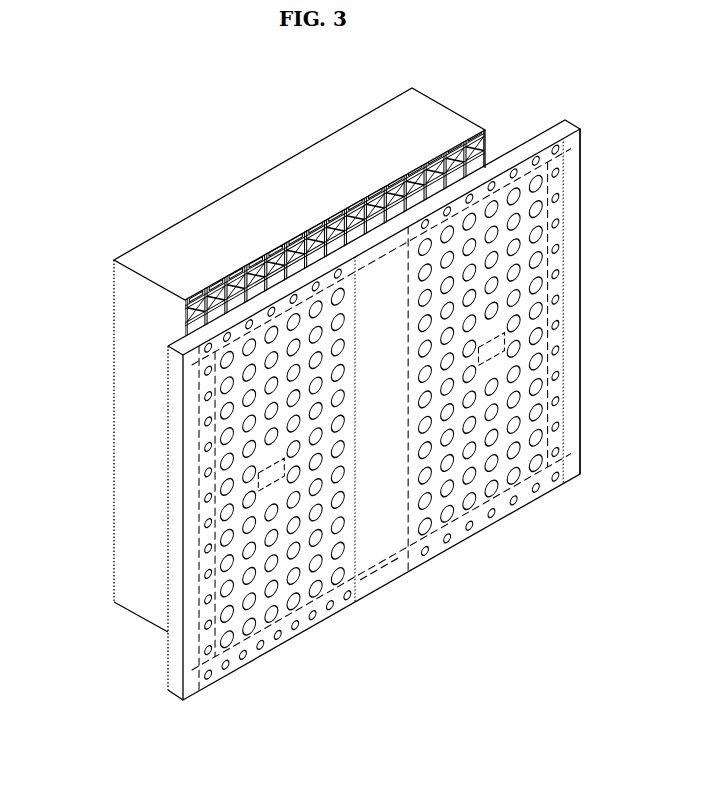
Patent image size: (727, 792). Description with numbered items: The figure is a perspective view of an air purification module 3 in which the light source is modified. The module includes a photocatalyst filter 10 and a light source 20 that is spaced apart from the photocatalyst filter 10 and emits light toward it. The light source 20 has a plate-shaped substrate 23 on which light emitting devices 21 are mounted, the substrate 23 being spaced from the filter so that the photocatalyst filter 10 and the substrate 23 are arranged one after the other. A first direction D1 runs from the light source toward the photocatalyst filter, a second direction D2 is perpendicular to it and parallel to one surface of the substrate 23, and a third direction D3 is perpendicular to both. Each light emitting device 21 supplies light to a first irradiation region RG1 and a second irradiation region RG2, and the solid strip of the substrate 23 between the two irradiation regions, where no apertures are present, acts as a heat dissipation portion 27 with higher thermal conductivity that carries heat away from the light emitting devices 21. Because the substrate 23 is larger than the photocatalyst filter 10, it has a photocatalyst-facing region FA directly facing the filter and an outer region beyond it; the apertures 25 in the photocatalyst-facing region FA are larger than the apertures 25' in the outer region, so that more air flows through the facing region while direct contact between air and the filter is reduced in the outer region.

The air purification module 3 is at (56, 110).
The photocatalyst filter 10 is at (195, 230).
The light source 20 is at (360, 410).
The light emitting device 21 is at (505, 344).
The substrate 23 is at (570, 287).
The aperture 25 is at (590, 386).
The aperture 25' is at (604, 313).
The heat dissipation portion 27 is at (383, 467).
The first irradiation region RG1 is at (198, 515).
The second irradiation region RG2 is at (562, 433).
The photocatalyst-facing region FA is at (394, 558).
The first direction D1 is at (560, 730).
The second direction D2 is at (560, 730).
The third direction D3 is at (560, 730).